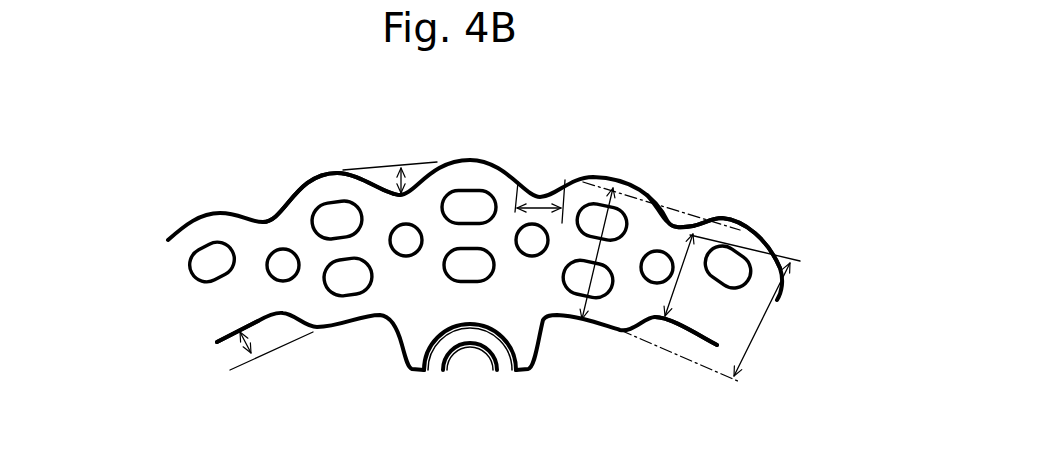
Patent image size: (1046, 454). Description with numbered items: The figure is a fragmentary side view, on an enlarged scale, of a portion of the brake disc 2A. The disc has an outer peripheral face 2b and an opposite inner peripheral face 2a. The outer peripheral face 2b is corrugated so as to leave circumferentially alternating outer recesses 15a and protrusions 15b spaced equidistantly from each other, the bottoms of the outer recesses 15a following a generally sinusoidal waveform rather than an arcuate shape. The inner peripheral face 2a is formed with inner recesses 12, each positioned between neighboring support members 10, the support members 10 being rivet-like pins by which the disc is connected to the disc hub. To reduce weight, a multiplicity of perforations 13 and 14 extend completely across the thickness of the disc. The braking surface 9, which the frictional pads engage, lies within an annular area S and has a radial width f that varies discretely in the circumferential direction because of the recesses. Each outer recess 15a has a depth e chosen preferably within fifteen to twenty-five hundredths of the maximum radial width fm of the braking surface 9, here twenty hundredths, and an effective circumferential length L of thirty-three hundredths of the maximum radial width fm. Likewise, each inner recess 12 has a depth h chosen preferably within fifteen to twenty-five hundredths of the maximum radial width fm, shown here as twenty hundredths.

The braking surface 9 is at (253, 252).
The brake disc 2A is at (303, 182).
The outer peripheral face 2b is at (602, 177).
The inner peripheral face 2a is at (587, 330).
The perforation 13 is at (343, 228).
The perforation 14 is at (280, 257).
The outer recess 15a is at (673, 224).
The protrusion 15b is at (760, 230).
The inner recess 12 is at (265, 323).
The support member 10 is at (443, 344).
The depth of outer recess e is at (407, 172).
The effective circumferential length of outer recess L is at (540, 197).
The maximum radial width of braking surface fm is at (661, 250).
The radial width of braking surface f is at (681, 270).
The annular area S is at (760, 325).
The depth of inner recess h is at (242, 343).